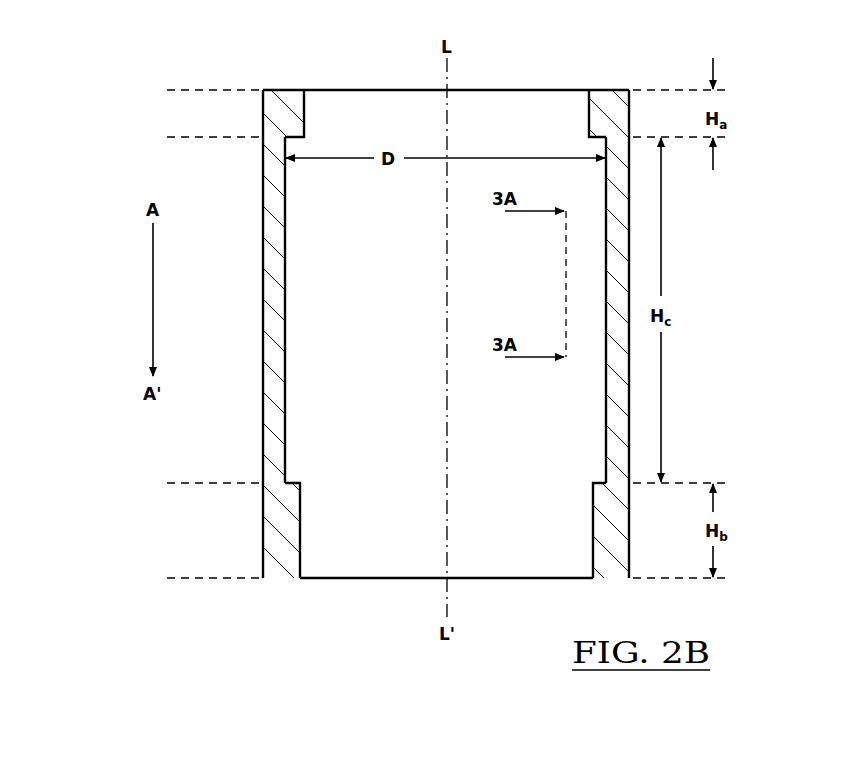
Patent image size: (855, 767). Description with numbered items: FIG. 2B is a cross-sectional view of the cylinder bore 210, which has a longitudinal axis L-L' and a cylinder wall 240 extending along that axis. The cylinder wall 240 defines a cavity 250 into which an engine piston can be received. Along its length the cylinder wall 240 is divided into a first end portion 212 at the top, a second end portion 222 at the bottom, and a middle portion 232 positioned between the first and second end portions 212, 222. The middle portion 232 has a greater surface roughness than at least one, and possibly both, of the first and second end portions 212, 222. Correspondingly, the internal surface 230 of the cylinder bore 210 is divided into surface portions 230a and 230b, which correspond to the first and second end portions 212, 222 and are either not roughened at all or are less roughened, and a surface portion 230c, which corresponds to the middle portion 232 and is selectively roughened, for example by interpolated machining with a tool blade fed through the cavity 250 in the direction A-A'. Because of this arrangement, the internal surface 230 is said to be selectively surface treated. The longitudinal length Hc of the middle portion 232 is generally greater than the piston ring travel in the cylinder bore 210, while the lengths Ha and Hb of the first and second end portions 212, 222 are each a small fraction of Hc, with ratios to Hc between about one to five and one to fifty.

The cylinder bore 210 is at (137, 69).
The first end portion 212 is at (261, 107).
The second end portion 222 is at (261, 520).
The middle portion 232 is at (261, 330).
The cylinder wall 240 is at (283, 88).
The internal surface 230 is at (291, 425).
The surface portion 230a is at (569, 113).
The surface portion 230b is at (570, 530).
The surface portion 230c is at (603, 424).
The cavity 250 is at (387, 308).